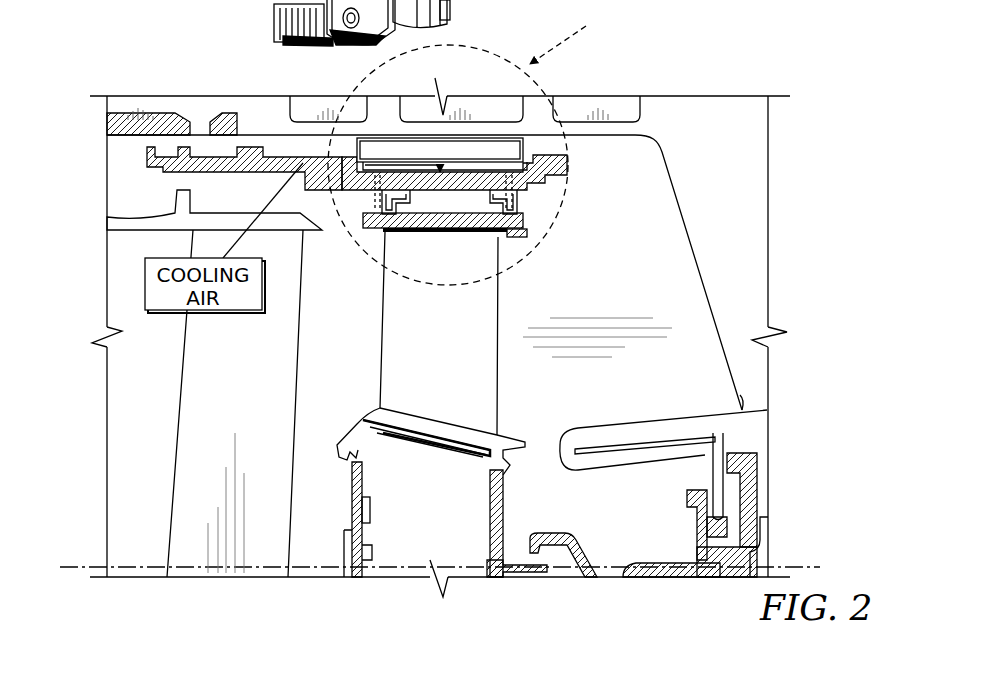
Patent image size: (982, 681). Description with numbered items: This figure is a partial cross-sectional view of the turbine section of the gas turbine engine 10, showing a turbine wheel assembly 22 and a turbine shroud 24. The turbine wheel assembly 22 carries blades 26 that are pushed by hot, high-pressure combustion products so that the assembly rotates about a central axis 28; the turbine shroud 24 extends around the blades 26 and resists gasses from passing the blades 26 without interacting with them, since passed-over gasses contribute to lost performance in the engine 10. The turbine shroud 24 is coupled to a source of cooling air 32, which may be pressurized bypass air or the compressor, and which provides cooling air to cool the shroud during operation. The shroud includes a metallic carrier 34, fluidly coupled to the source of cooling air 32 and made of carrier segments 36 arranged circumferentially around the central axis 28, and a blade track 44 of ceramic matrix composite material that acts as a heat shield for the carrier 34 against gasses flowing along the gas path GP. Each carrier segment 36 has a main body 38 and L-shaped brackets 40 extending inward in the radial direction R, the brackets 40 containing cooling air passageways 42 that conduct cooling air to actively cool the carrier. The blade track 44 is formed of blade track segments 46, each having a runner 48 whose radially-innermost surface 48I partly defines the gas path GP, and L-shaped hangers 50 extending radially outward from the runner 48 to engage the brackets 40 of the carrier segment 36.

The engine 10 is at (482, 85).
The turbine wheel assembly 22 is at (507, 392).
The turbine shroud 24 is at (528, 150).
The blades 26 is at (450, 369).
The central axis 28 is at (122, 567).
The source of cooling air 32 is at (344, 147).
The carrier 34 is at (541, 7).
The carrier segments 36 is at (470, 172).
The main body 38 is at (450, 188).
The brackets 40 is at (520, 193).
The cooling air passageways 42 is at (520, 181).
The blade track 44 is at (539, 205).
The blade track segments 46 is at (617, 190).
The runner 48 is at (473, 230).
The radially-innermost surface 48I is at (495, 240).
The hangers 50 is at (402, 213).
The gas path GP is at (432, 232).
The radial direction R is at (682, 372).